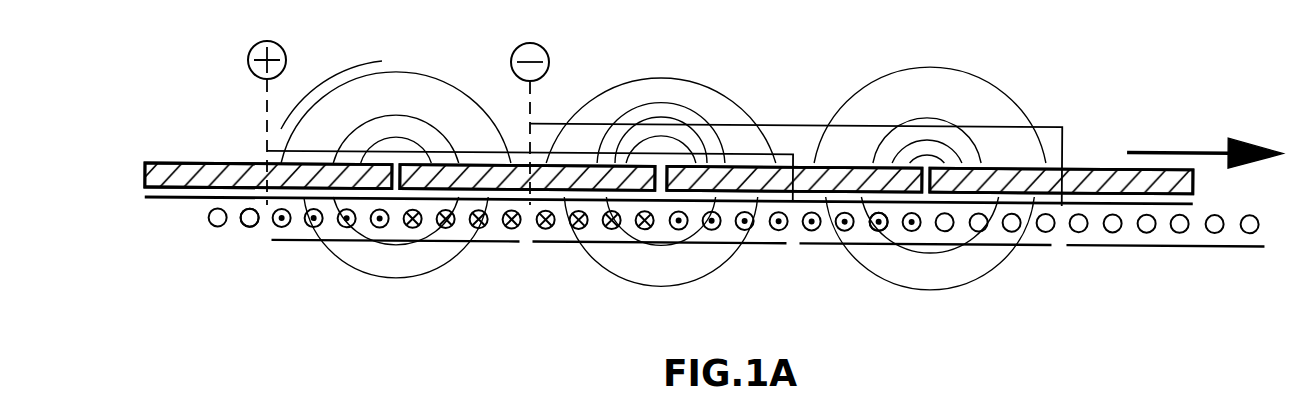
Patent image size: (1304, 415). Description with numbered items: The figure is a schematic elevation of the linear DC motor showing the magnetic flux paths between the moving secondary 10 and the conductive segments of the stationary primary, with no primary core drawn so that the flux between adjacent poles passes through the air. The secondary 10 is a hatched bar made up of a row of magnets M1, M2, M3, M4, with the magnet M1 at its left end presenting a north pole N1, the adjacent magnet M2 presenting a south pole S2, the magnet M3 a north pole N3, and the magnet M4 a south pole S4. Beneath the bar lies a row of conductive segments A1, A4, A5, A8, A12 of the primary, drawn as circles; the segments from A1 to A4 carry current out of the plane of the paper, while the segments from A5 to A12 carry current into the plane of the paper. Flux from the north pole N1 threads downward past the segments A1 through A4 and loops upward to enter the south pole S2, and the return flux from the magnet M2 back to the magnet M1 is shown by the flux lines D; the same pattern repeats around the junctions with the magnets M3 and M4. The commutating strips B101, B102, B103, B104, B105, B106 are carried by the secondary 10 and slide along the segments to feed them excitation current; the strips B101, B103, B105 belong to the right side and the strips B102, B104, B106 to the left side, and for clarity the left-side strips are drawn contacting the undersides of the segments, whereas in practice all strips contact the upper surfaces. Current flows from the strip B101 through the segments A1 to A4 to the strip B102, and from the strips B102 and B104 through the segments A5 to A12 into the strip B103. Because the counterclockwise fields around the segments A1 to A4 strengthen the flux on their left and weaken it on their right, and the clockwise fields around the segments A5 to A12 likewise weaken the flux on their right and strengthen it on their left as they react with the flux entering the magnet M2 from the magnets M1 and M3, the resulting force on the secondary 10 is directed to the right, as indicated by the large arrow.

The secondary 10 is at (140, 156).
The flux lines D is at (300, 112).
The magnet M1 is at (378, 159).
The magnet M2 is at (458, 163).
The magnet M3 is at (774, 158).
The magnet M4 is at (997, 166).
The north pole N1 is at (235, 202).
The south pole S2 is at (557, 202).
The north pole N3 is at (760, 206).
The south pole S4 is at (1103, 163).
The commutating strip B101 is at (215, 210).
The commutating strip B102 is at (315, 227).
The commutating strip B103 is at (580, 217).
The commutating strip B104 is at (547, 227).
The commutating strip B105 is at (879, 214).
The commutating strip B106 is at (878, 228).
The conductive segment A1 is at (282, 227).
The conductive segment A4 is at (381, 227).
The conductive segment A5 is at (414, 227).
The conductive segment A8 is at (514, 227).
The conductive segment A12 is at (648, 227).